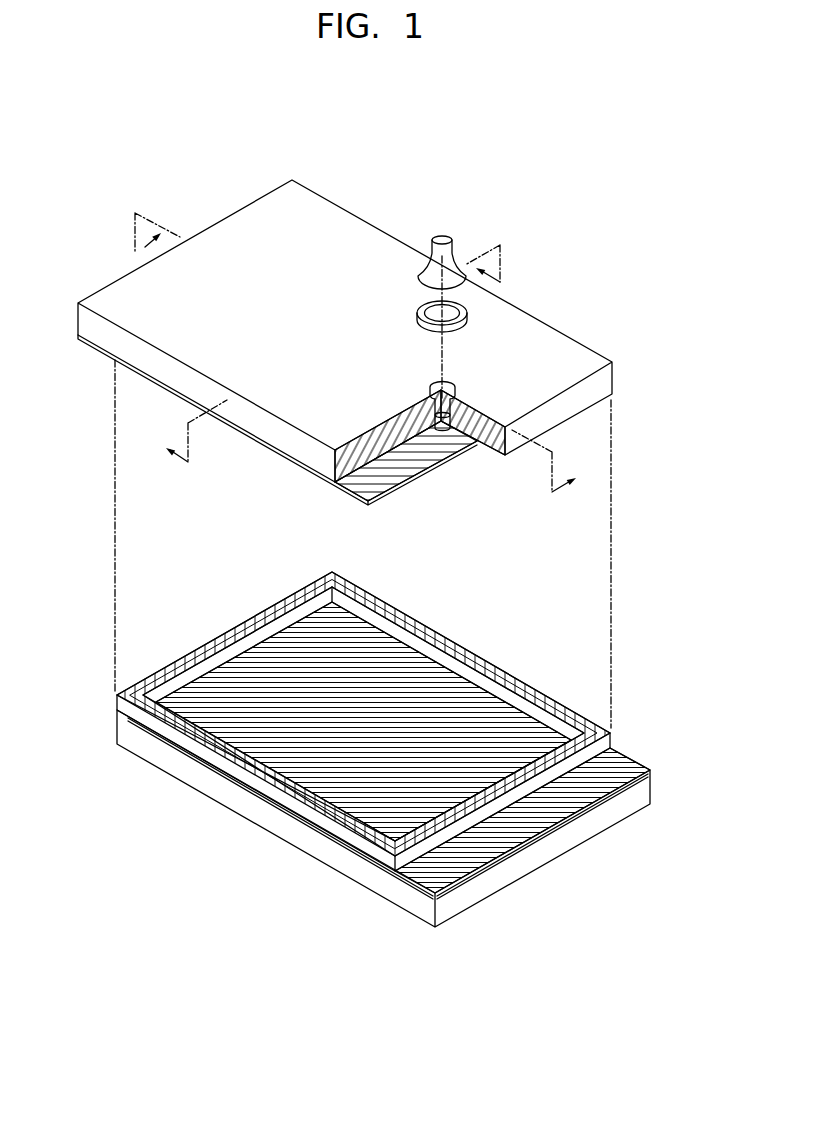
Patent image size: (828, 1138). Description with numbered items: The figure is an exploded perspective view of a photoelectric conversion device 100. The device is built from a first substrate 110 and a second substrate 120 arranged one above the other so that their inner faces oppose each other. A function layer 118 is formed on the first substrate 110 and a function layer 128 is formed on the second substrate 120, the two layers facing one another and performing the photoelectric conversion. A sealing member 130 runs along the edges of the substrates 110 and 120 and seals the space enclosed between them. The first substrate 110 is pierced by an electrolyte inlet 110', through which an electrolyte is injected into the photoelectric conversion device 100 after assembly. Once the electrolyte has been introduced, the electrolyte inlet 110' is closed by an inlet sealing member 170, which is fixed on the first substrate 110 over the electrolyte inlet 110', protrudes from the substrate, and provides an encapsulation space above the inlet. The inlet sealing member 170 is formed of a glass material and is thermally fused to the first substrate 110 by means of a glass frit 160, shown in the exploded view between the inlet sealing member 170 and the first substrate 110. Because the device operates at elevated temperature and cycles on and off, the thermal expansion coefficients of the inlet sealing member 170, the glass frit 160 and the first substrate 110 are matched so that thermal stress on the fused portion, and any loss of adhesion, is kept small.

The photoelectric conversion device 100 is at (212, 160).
The first substrate 110 is at (348, 331).
The electrolyte inlet 110' is at (459, 461).
The function layer 118 is at (335, 481).
The second substrate 120 is at (552, 848).
The function layer 128 is at (342, 765).
The sealing member 130 is at (498, 672).
The glass frit 160 is at (420, 315).
The inlet sealing member 170 is at (430, 270).